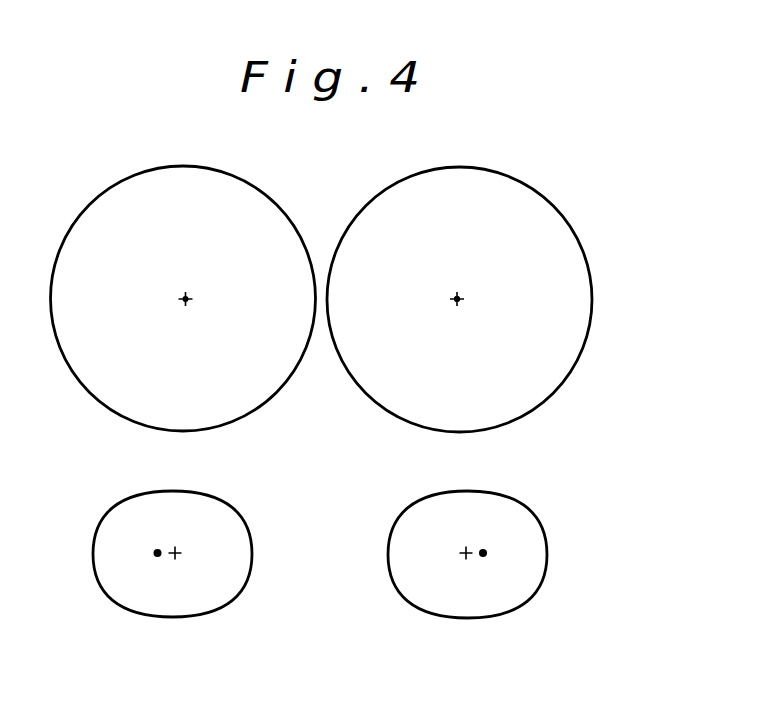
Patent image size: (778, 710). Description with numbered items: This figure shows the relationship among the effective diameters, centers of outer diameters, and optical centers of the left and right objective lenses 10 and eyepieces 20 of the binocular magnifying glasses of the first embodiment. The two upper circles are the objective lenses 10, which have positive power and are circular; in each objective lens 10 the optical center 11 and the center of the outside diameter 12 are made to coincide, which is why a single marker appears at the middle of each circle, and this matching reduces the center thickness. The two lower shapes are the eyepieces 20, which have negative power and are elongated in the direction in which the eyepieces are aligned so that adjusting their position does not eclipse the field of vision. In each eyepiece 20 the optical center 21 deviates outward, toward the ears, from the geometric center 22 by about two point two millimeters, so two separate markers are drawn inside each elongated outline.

The objective lens 10 is at (572, 227).
The optical center 11 is at (460, 298).
The center of the outside diameter 12 is at (457, 299).
The eyepiece 20 is at (543, 528).
The optical center 21 is at (486, 553).
The optical axis point 22 is at (468, 557).